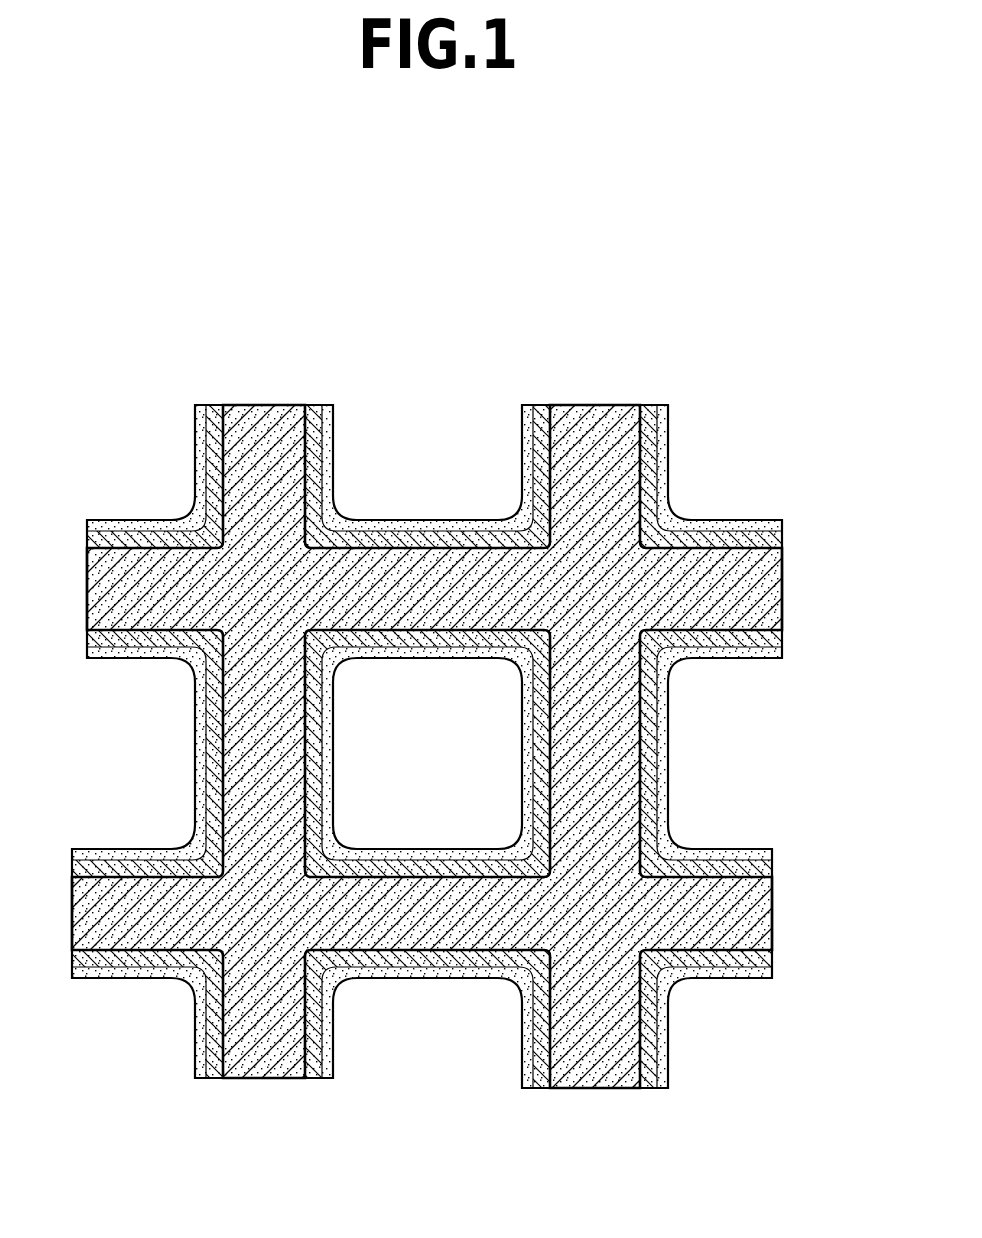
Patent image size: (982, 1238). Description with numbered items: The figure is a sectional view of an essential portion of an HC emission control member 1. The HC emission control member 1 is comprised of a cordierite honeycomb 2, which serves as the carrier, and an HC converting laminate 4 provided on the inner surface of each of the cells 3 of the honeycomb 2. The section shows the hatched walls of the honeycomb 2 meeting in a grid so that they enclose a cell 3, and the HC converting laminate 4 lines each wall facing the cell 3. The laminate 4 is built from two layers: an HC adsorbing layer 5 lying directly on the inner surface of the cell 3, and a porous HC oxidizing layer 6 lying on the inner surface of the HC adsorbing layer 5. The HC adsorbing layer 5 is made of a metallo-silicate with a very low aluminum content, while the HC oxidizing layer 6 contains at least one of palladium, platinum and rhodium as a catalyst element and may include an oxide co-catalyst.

The HC emission control member 1 is at (462, 724).
The cordierite honeycomb 2 is at (757, 908).
The cell 3 is at (428, 652).
The HC converting laminate 4 is at (423, 760).
The HC adsorbing layer 5 is at (213, 797).
The HC oxidizing layer 6 is at (110, 815).